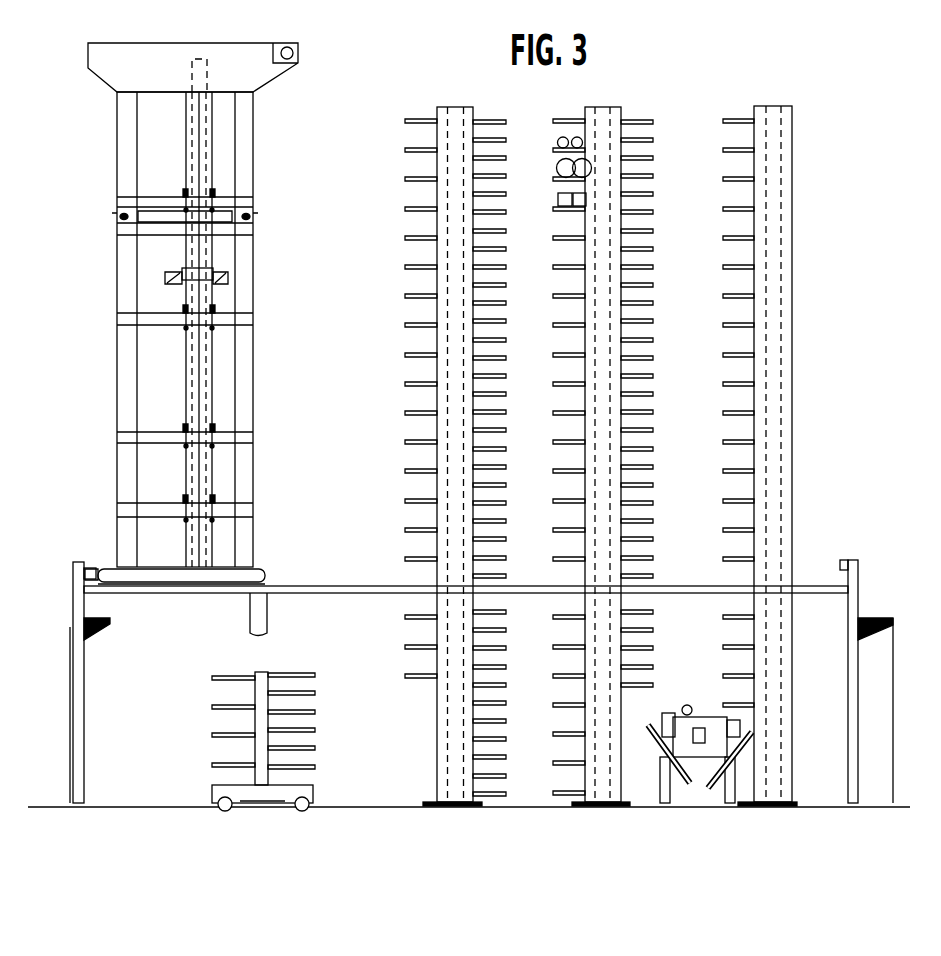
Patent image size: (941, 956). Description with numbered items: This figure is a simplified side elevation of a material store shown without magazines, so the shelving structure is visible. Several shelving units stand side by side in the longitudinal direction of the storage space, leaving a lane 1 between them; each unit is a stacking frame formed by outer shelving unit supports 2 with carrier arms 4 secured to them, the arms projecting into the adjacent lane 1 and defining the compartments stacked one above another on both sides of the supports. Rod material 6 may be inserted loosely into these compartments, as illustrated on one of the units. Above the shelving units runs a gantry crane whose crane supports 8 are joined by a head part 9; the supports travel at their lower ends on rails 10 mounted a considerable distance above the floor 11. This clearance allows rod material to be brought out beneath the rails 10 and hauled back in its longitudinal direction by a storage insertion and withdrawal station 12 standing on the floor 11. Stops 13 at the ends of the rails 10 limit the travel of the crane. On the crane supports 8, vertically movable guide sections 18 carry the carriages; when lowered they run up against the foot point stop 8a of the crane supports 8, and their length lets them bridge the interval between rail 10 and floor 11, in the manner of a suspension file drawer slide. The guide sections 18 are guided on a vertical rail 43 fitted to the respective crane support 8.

The lane 1 is at (553, 436).
The outer shelving unit support 2 is at (443, 228).
The carrier arm 4 is at (418, 118).
The rod material 6 is at (560, 172).
The crane support 8 is at (128, 167).
The foot point stop 8a is at (216, 568).
The head part 9 is at (116, 77).
The rail 10 is at (143, 594).
The floor 11 is at (345, 808).
The storage insertion and withdrawal station 12 is at (700, 776).
The stop 13 is at (92, 567).
The guide section 18 is at (196, 338).
The vertical rail 43 is at (209, 388).